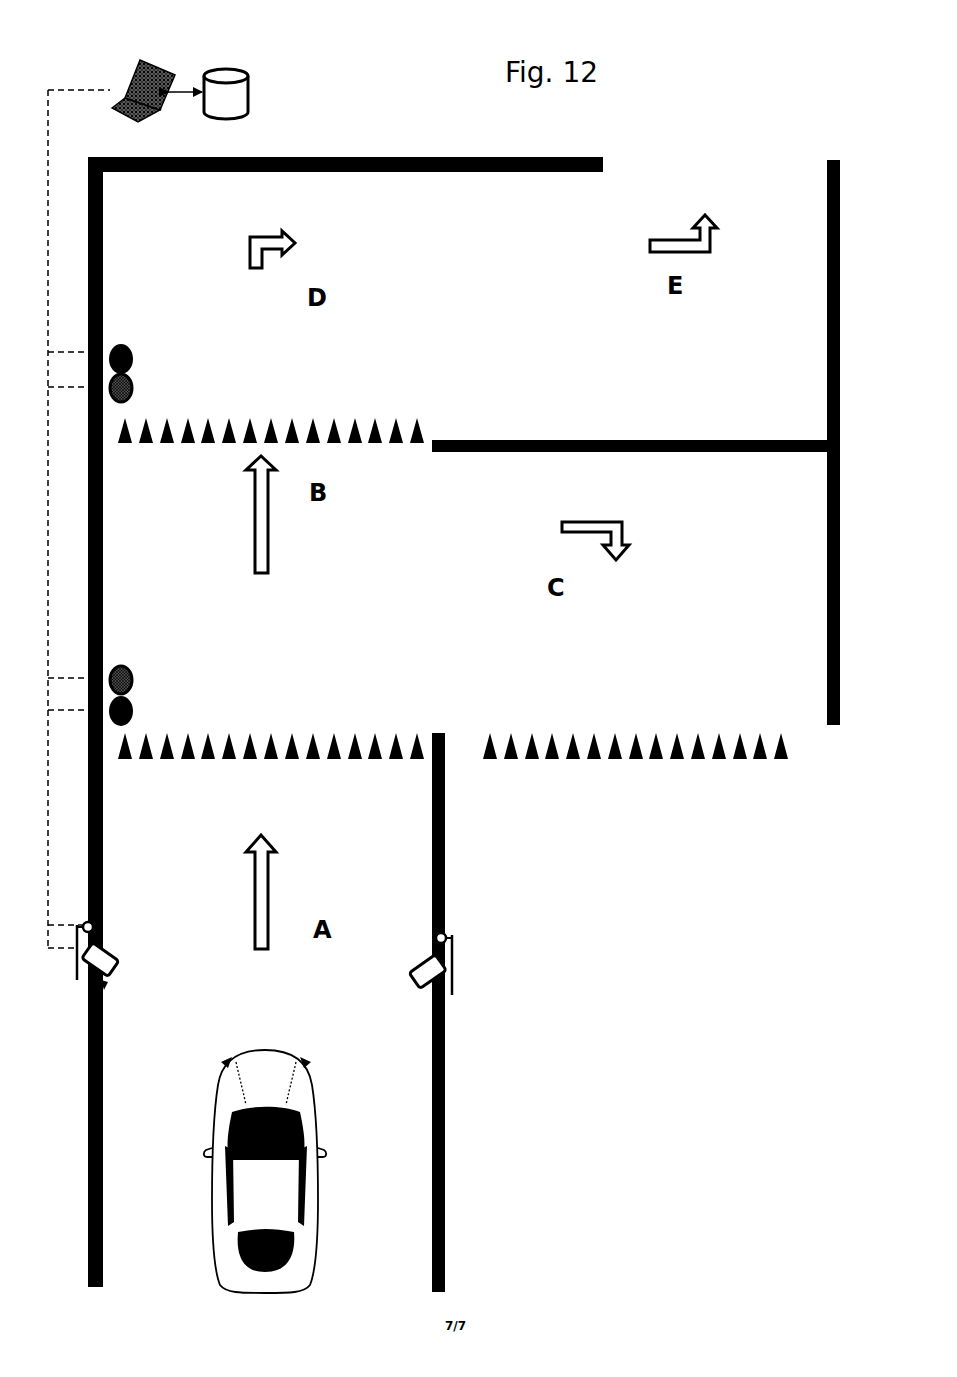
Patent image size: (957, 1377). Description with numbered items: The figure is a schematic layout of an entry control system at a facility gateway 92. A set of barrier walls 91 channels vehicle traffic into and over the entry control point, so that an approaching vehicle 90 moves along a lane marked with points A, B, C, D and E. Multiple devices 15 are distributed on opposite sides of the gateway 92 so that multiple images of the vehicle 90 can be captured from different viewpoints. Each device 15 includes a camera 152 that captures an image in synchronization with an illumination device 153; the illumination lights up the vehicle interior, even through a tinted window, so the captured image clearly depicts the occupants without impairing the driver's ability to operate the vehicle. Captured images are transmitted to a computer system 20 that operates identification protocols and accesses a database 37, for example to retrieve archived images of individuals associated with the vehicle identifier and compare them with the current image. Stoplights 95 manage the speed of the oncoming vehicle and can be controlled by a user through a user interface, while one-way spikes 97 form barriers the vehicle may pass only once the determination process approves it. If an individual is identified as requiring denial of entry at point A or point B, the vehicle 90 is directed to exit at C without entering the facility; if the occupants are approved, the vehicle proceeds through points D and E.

The barrier walls 91 is at (98, 223).
The one-way spikes 97 is at (416, 454).
The stoplights 95 is at (141, 356).
The device 15 is at (70, 958).
The camera 152 is at (98, 1031).
The illumination device 153 is at (101, 913).
The vehicle 90 is at (337, 1201).
The facility gateway 92 is at (609, 1029).
The computer system 20 is at (164, 127).
The database 37 is at (262, 78).